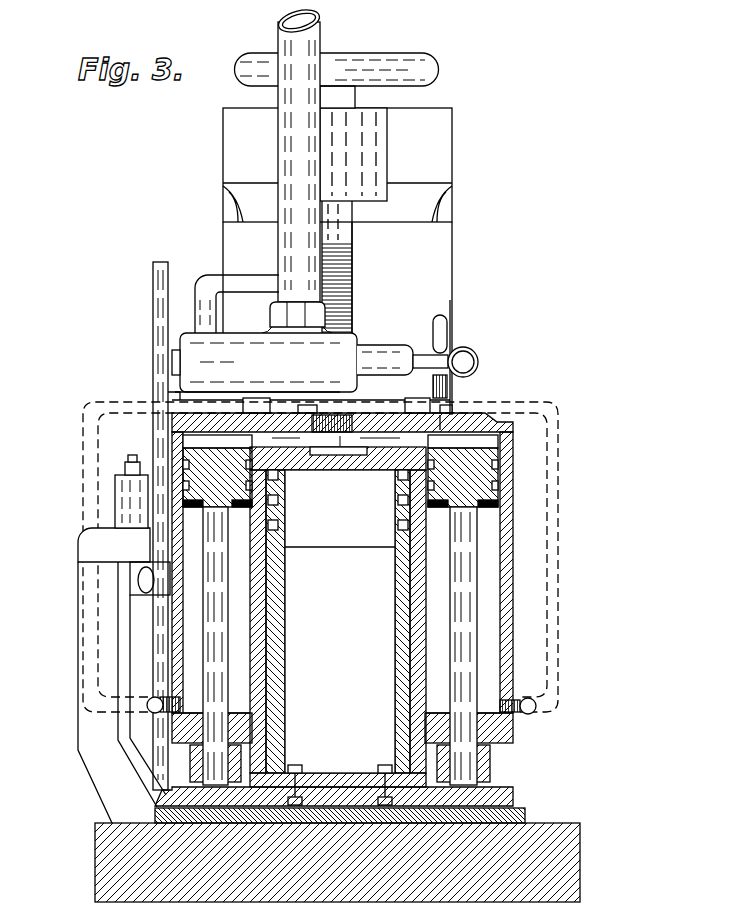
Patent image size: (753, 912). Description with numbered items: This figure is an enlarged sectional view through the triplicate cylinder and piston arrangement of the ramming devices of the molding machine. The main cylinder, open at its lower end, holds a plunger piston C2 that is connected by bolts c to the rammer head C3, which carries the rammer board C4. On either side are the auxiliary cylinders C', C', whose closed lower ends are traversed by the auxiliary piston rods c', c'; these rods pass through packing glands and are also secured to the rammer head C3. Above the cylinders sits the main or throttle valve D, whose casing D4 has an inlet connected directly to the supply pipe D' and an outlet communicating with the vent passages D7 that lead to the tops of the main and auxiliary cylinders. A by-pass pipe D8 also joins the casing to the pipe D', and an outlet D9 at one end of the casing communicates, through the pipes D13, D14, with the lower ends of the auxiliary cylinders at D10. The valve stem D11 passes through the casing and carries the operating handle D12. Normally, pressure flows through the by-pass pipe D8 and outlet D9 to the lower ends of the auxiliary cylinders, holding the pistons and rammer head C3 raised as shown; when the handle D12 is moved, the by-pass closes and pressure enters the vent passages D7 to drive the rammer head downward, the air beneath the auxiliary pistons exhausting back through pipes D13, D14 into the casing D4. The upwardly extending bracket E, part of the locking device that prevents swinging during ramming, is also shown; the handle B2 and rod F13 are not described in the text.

The pipe D' is at (279, 154).
The hand wheel handle B2 is at (367, 67).
The by pass pipe D8 is at (240, 273).
The bracket E is at (152, 299).
The outlet D9 is at (187, 397).
The main or throttle valve D is at (312, 373).
The valve casing D4 is at (357, 346).
The rod F13 is at (437, 315).
The valve stem D11 is at (450, 320).
The operating handle D12 is at (470, 348).
The vent passages D7 is at (445, 417).
The plunger piston C2 is at (197, 458).
The pipe D13 is at (98, 512).
The pipe D14 is at (550, 517).
The auxiliary cylinder C' is at (340, 646).
The auxiliary piston rod c' is at (295, 668).
The connection to lower ends of auxiliary cylinders D10 is at (153, 706).
The bolts c is at (340, 774).
The rammer head C3 is at (498, 789).
The rammer board C4 is at (582, 870).